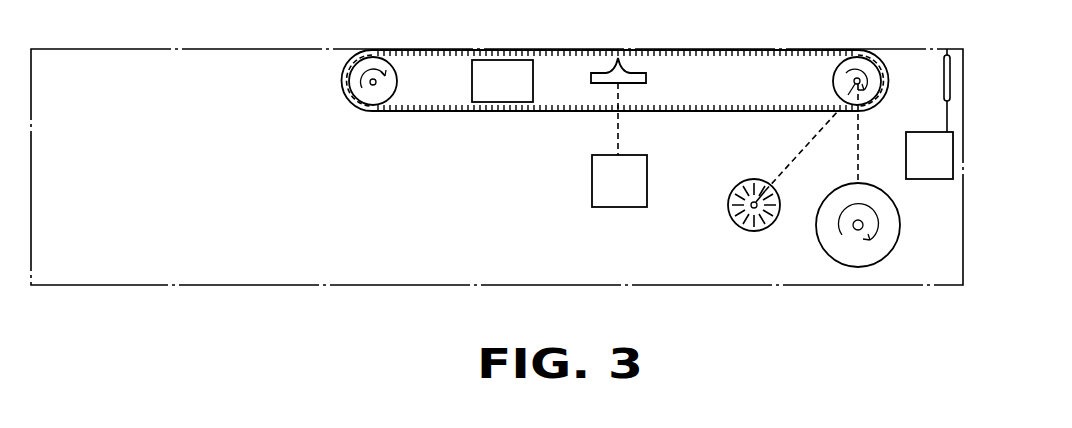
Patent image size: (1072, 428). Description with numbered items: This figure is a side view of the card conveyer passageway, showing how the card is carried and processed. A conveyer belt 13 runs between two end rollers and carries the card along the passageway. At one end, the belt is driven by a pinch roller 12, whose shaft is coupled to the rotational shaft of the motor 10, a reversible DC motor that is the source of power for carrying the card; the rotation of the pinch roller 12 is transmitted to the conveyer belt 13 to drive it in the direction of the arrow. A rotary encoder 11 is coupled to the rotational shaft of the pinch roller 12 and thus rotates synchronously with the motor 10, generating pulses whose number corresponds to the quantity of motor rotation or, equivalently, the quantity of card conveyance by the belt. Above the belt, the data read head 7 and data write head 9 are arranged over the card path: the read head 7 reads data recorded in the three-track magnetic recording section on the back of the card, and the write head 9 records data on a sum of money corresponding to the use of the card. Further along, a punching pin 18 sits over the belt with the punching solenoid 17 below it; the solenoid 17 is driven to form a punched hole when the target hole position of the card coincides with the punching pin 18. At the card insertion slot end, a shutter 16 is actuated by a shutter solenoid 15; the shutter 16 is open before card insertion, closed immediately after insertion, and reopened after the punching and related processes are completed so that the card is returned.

The data read head 7 is at (490, 72).
The data write head 9 is at (502, 81).
The motor 10 is at (860, 268).
The rotary encoder 11 is at (752, 233).
The pinch roller 12 is at (848, 62).
The conveyer belt 13 is at (728, 50).
The shutter solenoid 15 is at (950, 163).
The shutter 16 is at (947, 55).
The punching solenoid 17 is at (627, 198).
The punching pin 18 is at (628, 78).